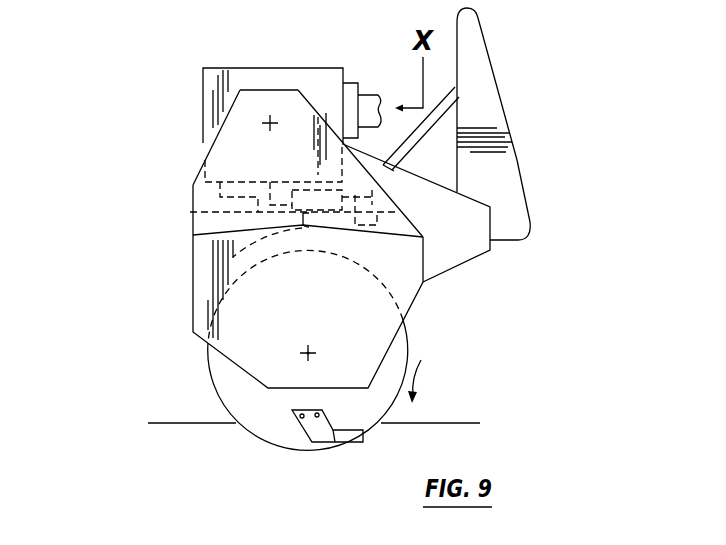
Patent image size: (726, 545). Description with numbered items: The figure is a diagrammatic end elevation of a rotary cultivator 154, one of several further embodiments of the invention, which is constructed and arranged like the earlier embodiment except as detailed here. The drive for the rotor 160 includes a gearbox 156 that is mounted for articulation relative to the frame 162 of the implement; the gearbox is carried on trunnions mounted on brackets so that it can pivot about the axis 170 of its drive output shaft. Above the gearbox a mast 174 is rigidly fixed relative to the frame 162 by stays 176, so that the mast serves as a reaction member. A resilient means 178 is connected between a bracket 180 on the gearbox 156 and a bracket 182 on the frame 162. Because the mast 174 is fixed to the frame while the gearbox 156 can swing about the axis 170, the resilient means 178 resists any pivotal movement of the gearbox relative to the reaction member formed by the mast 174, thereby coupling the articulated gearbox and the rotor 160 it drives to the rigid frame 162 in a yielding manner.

The rotary cultivator 154 is at (503, 68).
The gearbox 156 is at (238, 68).
The rotor 160 is at (406, 332).
The frame 162 is at (435, 186).
The axis 170 is at (270, 124).
The mast 174 is at (520, 166).
The stays 176 is at (445, 114).
The resilient means 178 is at (212, 267).
The bracket 180 is at (193, 213).
The bracket 182 is at (390, 212).